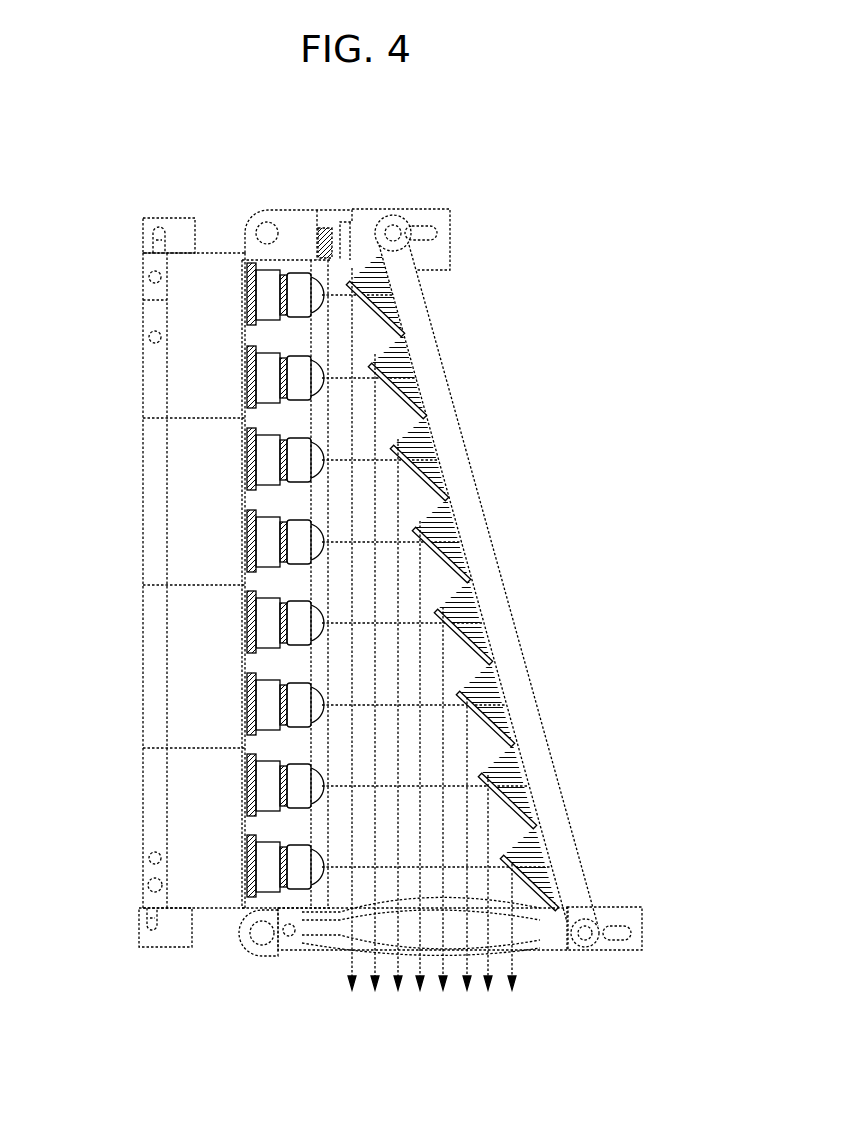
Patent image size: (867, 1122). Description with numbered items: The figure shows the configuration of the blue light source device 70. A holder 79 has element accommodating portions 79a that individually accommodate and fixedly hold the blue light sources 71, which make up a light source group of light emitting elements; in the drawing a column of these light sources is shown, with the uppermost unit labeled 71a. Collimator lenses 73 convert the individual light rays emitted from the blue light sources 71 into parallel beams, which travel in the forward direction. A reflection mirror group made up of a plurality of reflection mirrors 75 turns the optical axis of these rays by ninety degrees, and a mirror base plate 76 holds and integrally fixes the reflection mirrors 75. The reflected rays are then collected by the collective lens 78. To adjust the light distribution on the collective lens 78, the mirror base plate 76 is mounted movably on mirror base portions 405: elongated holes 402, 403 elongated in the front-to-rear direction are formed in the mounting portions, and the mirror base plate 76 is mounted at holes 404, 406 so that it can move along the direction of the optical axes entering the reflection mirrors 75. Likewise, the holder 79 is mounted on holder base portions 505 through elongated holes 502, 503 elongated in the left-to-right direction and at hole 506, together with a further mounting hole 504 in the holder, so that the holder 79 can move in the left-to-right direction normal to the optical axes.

The blue light source device 70 is at (642, 950).
The blue light source 71 is at (268, 380).
The light source unit 71a is at (268, 293).
The collimator lens 73 is at (293, 465).
The reflection mirror 75 is at (438, 478).
The mirror base plate 76 is at (445, 418).
The collective lens 78 is at (515, 958).
The holder 79 is at (202, 445).
The element accommodating portion 79a is at (250, 252).
The elongated hole 402 is at (430, 240).
The elongated hole 403 is at (620, 938).
The hole 404 is at (400, 238).
The mirror base portion 405 is at (628, 917).
The hole 406 is at (597, 921).
The elongated hole 502 is at (152, 240).
The elongated hole 503 is at (147, 922).
The mounting hole 504 is at (149, 277).
The holder base portion 505 is at (180, 240).
The hole 506 is at (147, 886).